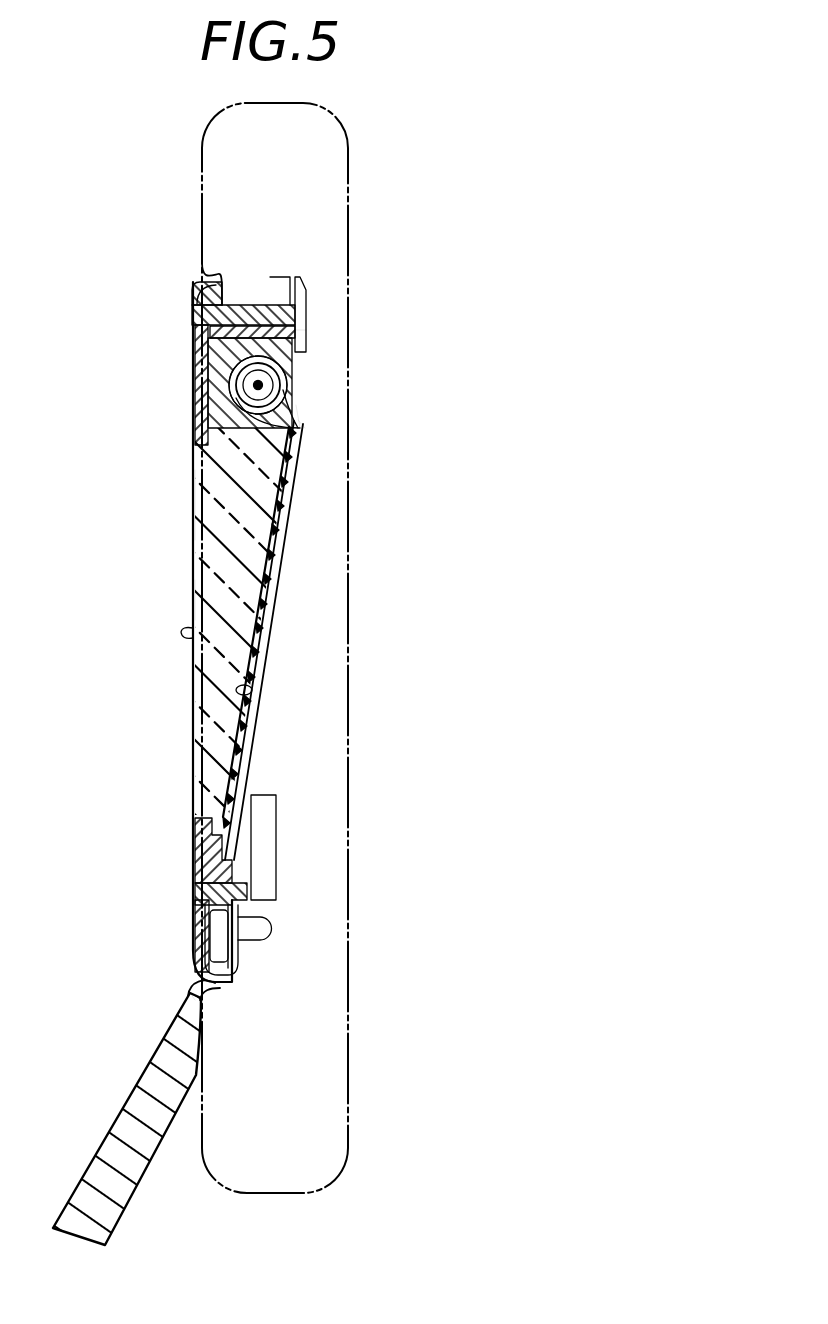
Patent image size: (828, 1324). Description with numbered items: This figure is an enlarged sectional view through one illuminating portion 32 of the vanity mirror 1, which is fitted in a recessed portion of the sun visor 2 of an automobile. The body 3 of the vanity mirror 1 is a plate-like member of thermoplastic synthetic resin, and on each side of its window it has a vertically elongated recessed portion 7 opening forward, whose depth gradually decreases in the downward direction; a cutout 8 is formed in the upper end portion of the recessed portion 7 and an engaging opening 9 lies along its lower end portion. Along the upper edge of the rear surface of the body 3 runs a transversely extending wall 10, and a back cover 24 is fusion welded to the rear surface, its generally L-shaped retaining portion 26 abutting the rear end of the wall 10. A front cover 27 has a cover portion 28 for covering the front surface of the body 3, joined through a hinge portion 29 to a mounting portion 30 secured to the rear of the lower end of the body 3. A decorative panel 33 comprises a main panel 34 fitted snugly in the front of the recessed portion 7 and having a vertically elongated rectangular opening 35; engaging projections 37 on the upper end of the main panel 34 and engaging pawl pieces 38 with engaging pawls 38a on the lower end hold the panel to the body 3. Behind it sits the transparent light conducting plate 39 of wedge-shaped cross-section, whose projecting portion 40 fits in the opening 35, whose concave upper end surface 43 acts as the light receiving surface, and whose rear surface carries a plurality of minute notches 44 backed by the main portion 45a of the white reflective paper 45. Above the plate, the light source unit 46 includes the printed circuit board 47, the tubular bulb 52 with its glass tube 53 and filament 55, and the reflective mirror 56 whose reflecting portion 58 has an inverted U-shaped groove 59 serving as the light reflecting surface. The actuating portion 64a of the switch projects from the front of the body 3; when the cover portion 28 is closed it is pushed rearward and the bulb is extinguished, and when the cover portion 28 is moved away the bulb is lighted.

The vanity mirror 1 is at (140, 228).
The sun visor 2 is at (355, 168).
The body 3 is at (192, 310).
The recessed portion 7 is at (262, 700).
The cutout 8 is at (308, 422).
The engaging opening 9 is at (214, 894).
The wall 10 is at (305, 288).
The back cover 24 is at (305, 333).
The retaining portion 26 is at (307, 318).
The front cover 27 is at (113, 1123).
The cover portion 28 is at (148, 1063).
The hinge portion 29 is at (210, 997).
The mounting portion 30 is at (240, 965).
The illuminating portion 32 is at (194, 554).
The decorative panel 33 is at (198, 833).
The main panel 34 is at (218, 396).
The opening 35 is at (200, 436).
The engaging projection 37 is at (227, 306).
The engaging pawl piece 38 is at (262, 870).
The engaging pawl 38a is at (262, 918).
The light conducting plate 39 is at (191, 599).
The projecting portion 40 is at (194, 500).
The upper end surface 43 is at (304, 414).
The minute notches 44 is at (286, 506).
The reflective paper 45 is at (290, 540).
The main portion 45a is at (258, 650).
The light source unit 46 is at (215, 348).
The printed circuit board 47 is at (258, 306).
The tubular bulb 52 is at (298, 396).
The glass tube 53 is at (300, 405).
The filament 55 is at (254, 385).
The reflective mirror 56 is at (288, 366).
The reflecting portion 58 is at (290, 382).
The groove 59 is at (238, 372).
The actuating portion 64a is at (180, 638).